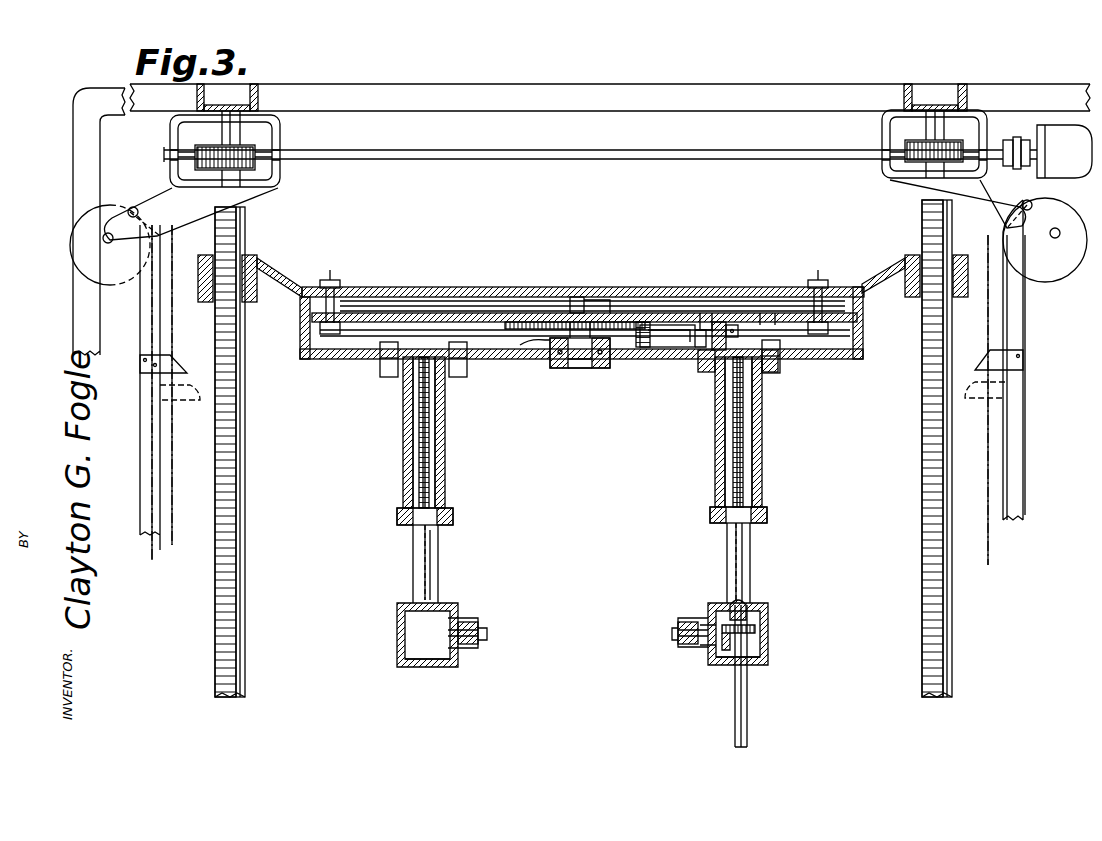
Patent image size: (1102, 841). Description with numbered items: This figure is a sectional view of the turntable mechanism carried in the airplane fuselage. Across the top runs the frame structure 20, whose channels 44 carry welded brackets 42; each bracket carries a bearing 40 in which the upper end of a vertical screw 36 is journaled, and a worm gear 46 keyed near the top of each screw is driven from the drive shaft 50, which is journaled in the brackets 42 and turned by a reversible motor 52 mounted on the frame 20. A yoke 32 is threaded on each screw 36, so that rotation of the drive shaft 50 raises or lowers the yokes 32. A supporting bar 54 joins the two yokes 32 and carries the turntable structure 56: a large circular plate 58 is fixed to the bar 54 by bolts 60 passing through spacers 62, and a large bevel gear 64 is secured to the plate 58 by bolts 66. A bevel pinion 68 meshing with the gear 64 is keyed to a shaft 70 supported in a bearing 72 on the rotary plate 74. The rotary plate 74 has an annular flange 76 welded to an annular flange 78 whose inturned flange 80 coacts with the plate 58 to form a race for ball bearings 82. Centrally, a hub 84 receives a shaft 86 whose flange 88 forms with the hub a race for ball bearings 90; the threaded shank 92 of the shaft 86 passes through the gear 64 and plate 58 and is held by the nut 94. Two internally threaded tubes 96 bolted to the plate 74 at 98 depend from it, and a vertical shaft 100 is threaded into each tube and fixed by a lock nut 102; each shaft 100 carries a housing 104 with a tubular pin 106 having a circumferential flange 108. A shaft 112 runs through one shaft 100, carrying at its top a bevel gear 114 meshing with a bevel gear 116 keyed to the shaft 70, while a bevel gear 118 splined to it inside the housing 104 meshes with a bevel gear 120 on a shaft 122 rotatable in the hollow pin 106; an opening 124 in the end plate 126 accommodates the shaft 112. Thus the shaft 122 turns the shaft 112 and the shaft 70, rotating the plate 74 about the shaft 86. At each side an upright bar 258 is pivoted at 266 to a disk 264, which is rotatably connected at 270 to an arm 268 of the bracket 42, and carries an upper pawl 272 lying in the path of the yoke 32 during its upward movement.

The frame structure 20 is at (499, 90).
The yoke 32 is at (252, 260).
The vertical screw 36 is at (246, 410).
The bearing 40 is at (206, 185).
The bracket 42 is at (280, 135).
The channel 44 is at (256, 90).
The worm gear 46 is at (212, 148).
The drive shaft 50 is at (690, 150).
The reversible motor 52 is at (1048, 178).
The supporting bar 54 is at (445, 300).
The turntable structure 56 is at (468, 305).
The circular plate 58 is at (490, 310).
The bolt 60 is at (328, 280).
The spacer 62 is at (340, 300).
The bevel gear 64 is at (545, 318).
The bolt 66 is at (522, 312).
The bevel pinion 68 is at (640, 350).
The shaft 70 is at (698, 348).
The bearing 72 is at (712, 352).
The rotary plate 74 is at (660, 348).
The annular flange 76 is at (850, 358).
The annular flange 78 is at (863, 335).
The inturned flange 80 is at (845, 288).
The ball bearings 82 is at (860, 300).
The hub 84 is at (525, 350).
The shaft 86 is at (580, 368).
The flange 88 is at (605, 368).
The ball bearings 90 is at (560, 368).
The threaded shank 92 is at (598, 310).
The nut 94 is at (577, 300).
The internally threaded tube 96 is at (446, 458).
The bolt 98 is at (388, 378).
The vertical shaft 100 is at (432, 552).
The lock nut 102 is at (454, 516).
The housing 104 is at (450, 610).
The tubular pin 106 is at (478, 622).
The circumferential flange 108 is at (487, 644).
The shaft 112 is at (752, 598).
The bevel gear 114 is at (765, 312).
The bevel gear 116 is at (705, 312).
The bevel gear 118 is at (768, 612).
The bevel gear 120 is at (722, 660).
The shaft 122 is at (710, 625).
The opening 124 is at (752, 665).
The end plate 126 is at (430, 668).
The upright bar 258 is at (142, 458).
The disk 264 is at (118, 278).
The pivot connection 266 is at (133, 207).
The arm 268 is at (165, 233).
The rotatable connection 270 is at (103, 238).
The upper pawl 272 is at (182, 365).